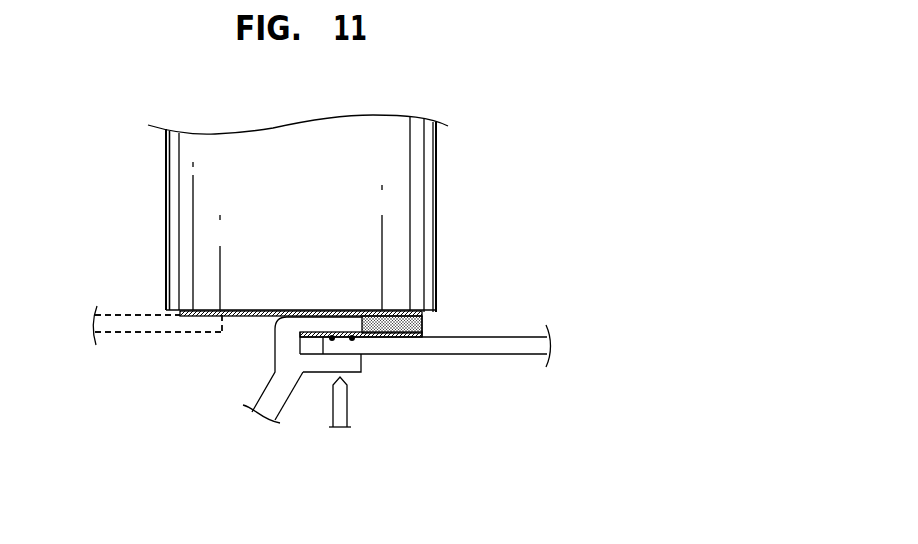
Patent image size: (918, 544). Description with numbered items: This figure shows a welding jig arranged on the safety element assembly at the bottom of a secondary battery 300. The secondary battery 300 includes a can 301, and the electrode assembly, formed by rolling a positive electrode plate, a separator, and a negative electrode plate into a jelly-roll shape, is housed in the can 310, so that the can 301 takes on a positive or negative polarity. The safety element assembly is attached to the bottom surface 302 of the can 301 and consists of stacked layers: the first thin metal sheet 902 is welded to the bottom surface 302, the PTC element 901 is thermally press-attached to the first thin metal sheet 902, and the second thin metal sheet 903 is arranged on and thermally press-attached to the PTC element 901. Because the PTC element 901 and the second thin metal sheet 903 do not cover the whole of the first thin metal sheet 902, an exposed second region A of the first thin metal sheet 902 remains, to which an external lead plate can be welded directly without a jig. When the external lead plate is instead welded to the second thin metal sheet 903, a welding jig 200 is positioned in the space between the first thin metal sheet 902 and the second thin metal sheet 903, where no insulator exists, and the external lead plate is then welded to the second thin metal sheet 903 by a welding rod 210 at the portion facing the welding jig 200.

The secondary battery 300 is at (400, 172).
The can 301 is at (168, 173).
The bottom surface 302 is at (162, 312).
The can 310 is at (159, 333).
The welding jig 200 is at (260, 433).
The welding rod 210 is at (345, 410).
The PTC element 901 is at (422, 323).
The first thin metal sheet 902 is at (393, 311).
The second thin metal sheet 903 is at (422, 335).
The second region A is at (241, 338).